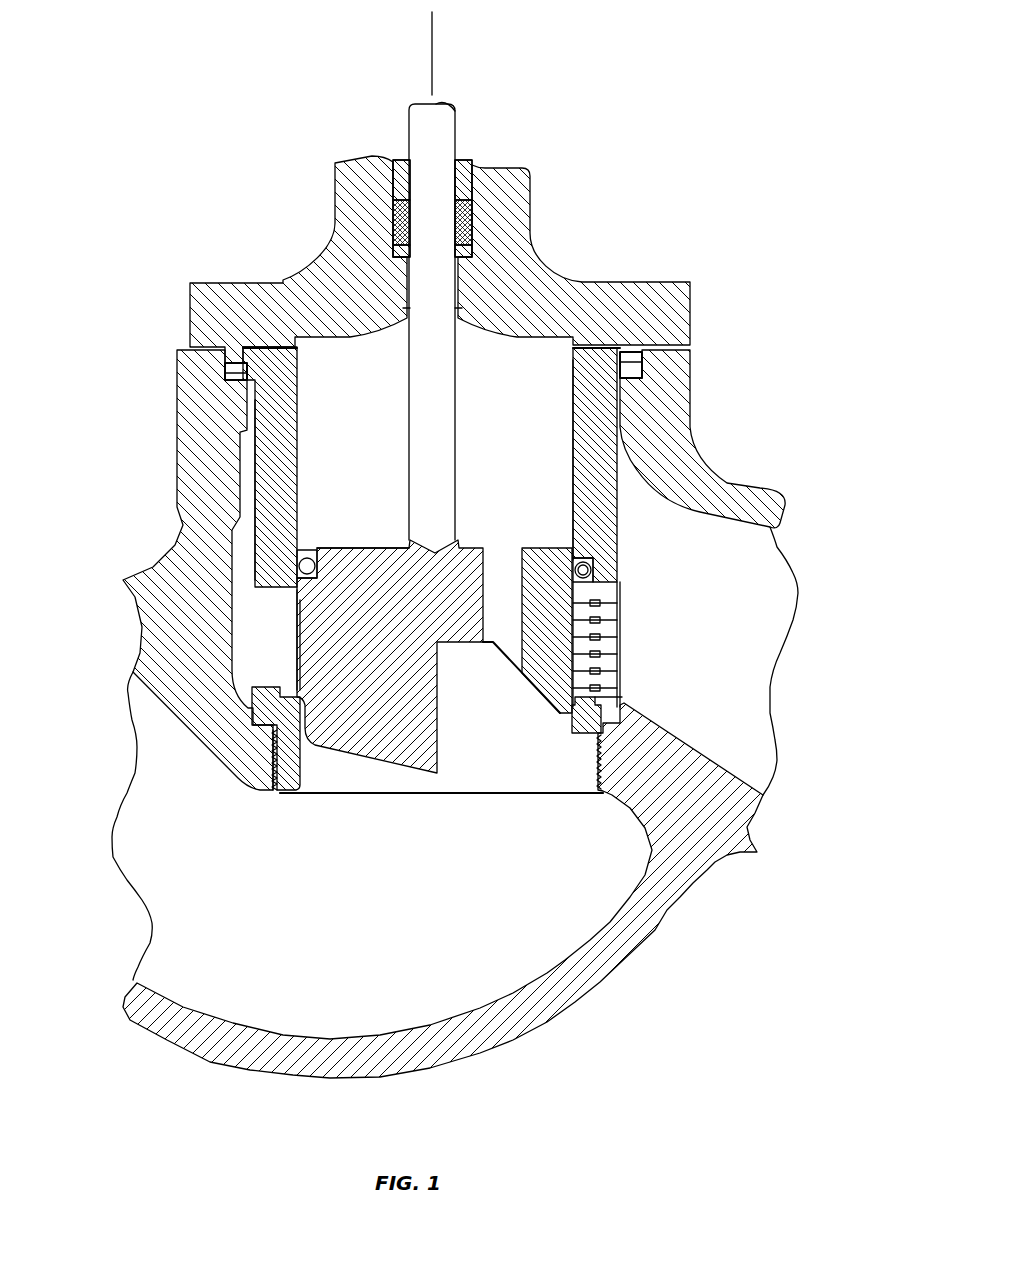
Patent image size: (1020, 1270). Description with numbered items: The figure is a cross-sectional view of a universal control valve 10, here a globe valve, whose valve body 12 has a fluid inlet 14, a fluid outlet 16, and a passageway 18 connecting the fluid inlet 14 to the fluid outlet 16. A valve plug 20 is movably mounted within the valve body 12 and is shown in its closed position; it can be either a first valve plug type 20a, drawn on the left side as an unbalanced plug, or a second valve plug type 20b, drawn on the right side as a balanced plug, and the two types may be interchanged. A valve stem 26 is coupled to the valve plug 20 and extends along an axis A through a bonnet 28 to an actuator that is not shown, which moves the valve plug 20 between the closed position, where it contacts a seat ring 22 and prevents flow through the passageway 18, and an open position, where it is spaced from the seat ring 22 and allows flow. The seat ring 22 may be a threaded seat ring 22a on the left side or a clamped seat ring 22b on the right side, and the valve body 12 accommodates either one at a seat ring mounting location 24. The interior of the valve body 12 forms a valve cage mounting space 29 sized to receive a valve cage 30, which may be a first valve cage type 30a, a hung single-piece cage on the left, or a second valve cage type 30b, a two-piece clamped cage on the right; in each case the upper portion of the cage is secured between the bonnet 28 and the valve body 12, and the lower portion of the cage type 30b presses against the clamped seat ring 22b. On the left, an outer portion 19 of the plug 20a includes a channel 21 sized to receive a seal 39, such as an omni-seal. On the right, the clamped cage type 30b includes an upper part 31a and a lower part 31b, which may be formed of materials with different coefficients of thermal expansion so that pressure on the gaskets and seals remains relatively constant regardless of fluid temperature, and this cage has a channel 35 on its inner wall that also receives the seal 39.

The axis A is at (432, 50).
The universal control valve 10 is at (128, 432).
The valve body 12 is at (692, 425).
The fluid inlet 14 is at (145, 845).
The fluid outlet 16 is at (737, 639).
The passageway 18 is at (380, 924).
The outer portion 19 is at (297, 618).
The valve plug 20 is at (311, 595).
The first valve plug type 20a is at (310, 647).
The second valve plug type 20b is at (560, 548).
The channel 21 is at (328, 548).
The seat ring 22 is at (290, 803).
The threaded seat ring 22a is at (265, 687).
The clamped seat ring 22b is at (582, 735).
The seat ring mounting location 24 is at (252, 742).
The valve stem 26 is at (443, 353).
The bonnet 28 is at (645, 290).
The valve cage mounting space 29 is at (258, 346).
The valve cage 30 is at (270, 415).
The first valve cage type 30a is at (260, 486).
The second valve cage type 30b is at (576, 381).
The upper part 31a is at (577, 451).
The lower part 31b is at (612, 648).
The channel 35 is at (598, 572).
The seal 39 is at (308, 559).